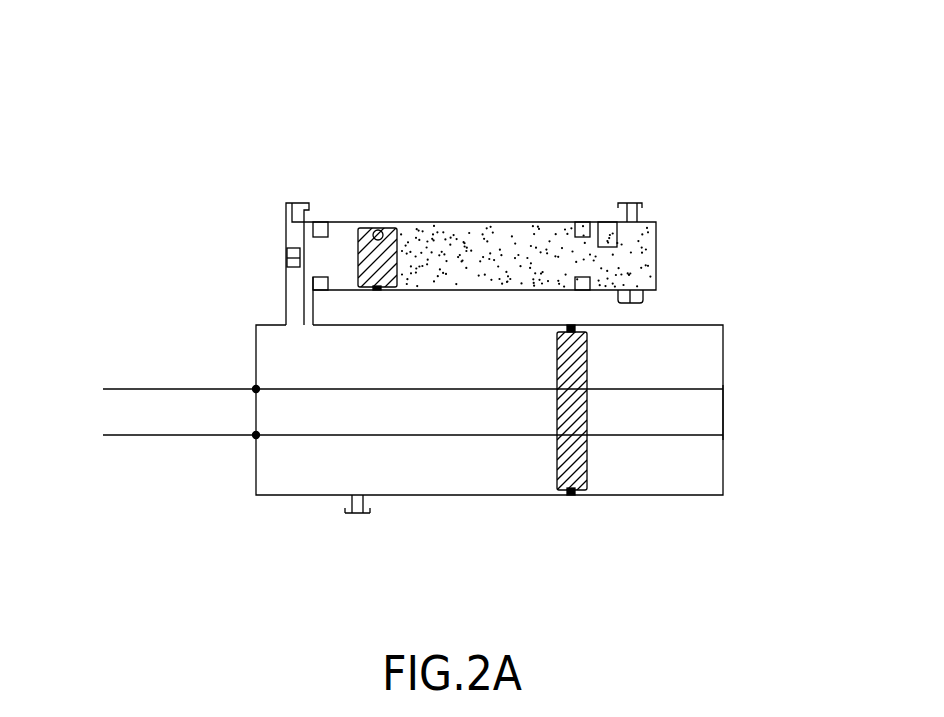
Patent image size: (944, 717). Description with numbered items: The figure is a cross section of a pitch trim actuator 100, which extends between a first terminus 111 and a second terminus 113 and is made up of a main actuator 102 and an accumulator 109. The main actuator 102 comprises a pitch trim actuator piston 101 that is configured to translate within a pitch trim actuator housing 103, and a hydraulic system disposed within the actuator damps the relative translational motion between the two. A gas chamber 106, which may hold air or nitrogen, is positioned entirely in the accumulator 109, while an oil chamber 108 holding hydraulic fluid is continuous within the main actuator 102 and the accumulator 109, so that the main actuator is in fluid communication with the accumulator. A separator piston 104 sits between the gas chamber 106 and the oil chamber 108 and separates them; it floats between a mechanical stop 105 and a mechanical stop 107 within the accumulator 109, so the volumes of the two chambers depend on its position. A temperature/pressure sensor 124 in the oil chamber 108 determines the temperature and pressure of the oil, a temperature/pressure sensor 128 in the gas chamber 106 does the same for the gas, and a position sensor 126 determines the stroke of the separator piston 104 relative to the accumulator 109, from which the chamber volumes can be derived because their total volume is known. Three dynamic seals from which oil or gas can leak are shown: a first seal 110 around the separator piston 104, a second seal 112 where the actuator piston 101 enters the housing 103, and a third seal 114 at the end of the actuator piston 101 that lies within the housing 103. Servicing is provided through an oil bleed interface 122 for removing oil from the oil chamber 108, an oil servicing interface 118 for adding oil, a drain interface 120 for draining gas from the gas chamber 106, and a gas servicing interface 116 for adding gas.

The pitch trim actuator 100 is at (175, 120).
The pitch trim actuator piston 101 is at (140, 435).
The main actuator 102 is at (467, 495).
The pitch trim actuator housing 103 is at (779, 426).
The separator piston 104 is at (350, 228).
The mechanical stop 105 is at (580, 222).
The gas chamber 106 is at (640, 246).
The mechanical stop 107 is at (320, 222).
The oil chamber 108 is at (287, 265).
The accumulator 109 is at (494, 146).
The first seal 110 is at (378, 229).
The first terminus 111 is at (117, 408).
The second seal 112 is at (253, 437).
The second terminus 113 is at (723, 405).
The third seal 114 is at (572, 495).
The gas servicing interface 116 is at (632, 203).
The oil servicing interface 118 is at (353, 515).
The drain interface 120 is at (643, 298).
The oil bleed interface 122 is at (295, 203).
The temperature/pressure sensor 124 is at (287, 253).
The position sensor 126 is at (384, 231).
The temperature/pressure sensor 128 is at (605, 222).